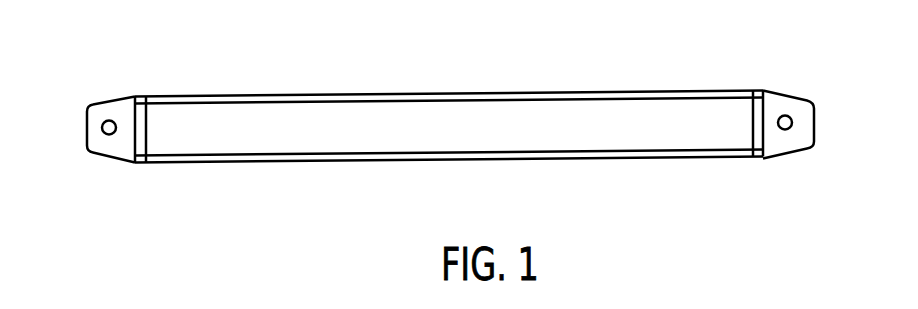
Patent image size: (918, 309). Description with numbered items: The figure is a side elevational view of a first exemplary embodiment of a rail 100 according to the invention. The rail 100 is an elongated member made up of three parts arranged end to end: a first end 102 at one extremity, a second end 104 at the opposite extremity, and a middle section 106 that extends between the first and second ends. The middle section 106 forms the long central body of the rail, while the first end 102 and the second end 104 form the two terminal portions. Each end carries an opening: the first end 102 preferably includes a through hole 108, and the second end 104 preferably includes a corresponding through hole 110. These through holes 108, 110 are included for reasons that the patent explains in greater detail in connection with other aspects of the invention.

The rail 100 is at (545, 82).
The first end 102 is at (97, 90).
The second end 104 is at (783, 75).
The middle section 106 is at (367, 170).
The through hole 108 is at (103, 133).
The through hole 110 is at (790, 128).